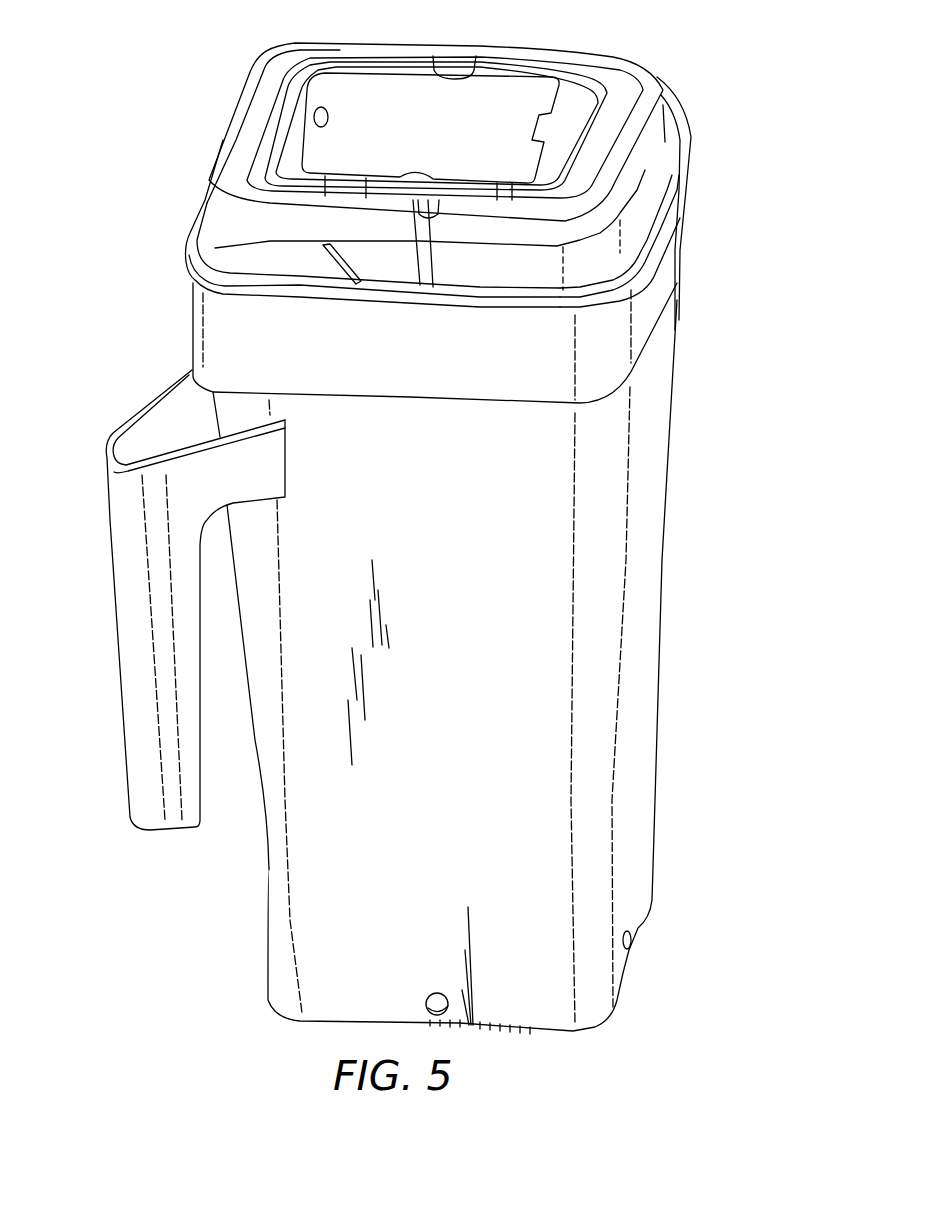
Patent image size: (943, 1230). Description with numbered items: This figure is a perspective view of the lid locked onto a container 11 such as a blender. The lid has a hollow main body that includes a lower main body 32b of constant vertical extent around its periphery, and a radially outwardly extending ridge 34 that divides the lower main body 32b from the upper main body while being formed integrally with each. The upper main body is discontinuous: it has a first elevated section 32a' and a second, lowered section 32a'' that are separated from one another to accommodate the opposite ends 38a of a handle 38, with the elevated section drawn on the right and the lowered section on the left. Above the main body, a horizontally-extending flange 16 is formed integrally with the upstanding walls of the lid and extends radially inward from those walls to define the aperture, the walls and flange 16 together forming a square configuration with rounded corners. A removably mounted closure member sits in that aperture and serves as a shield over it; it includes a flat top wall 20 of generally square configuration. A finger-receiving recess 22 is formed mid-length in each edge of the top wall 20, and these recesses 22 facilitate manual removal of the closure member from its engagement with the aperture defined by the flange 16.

The pitcher body 11 is at (662, 573).
The horizontally-extending flange 16 is at (560, 150).
The flat top wall 20 is at (440, 137).
The finger-receiving recess 22 is at (443, 72).
The first elevated section 32a' is at (472, 128).
The second lowered section 32a'' is at (340, 223).
The lower main body 32b is at (685, 197).
The radially outwardly extending ridge 34 is at (690, 137).
The handle 38 is at (243, 112).
The opposite ends of handle 38a is at (400, 268).